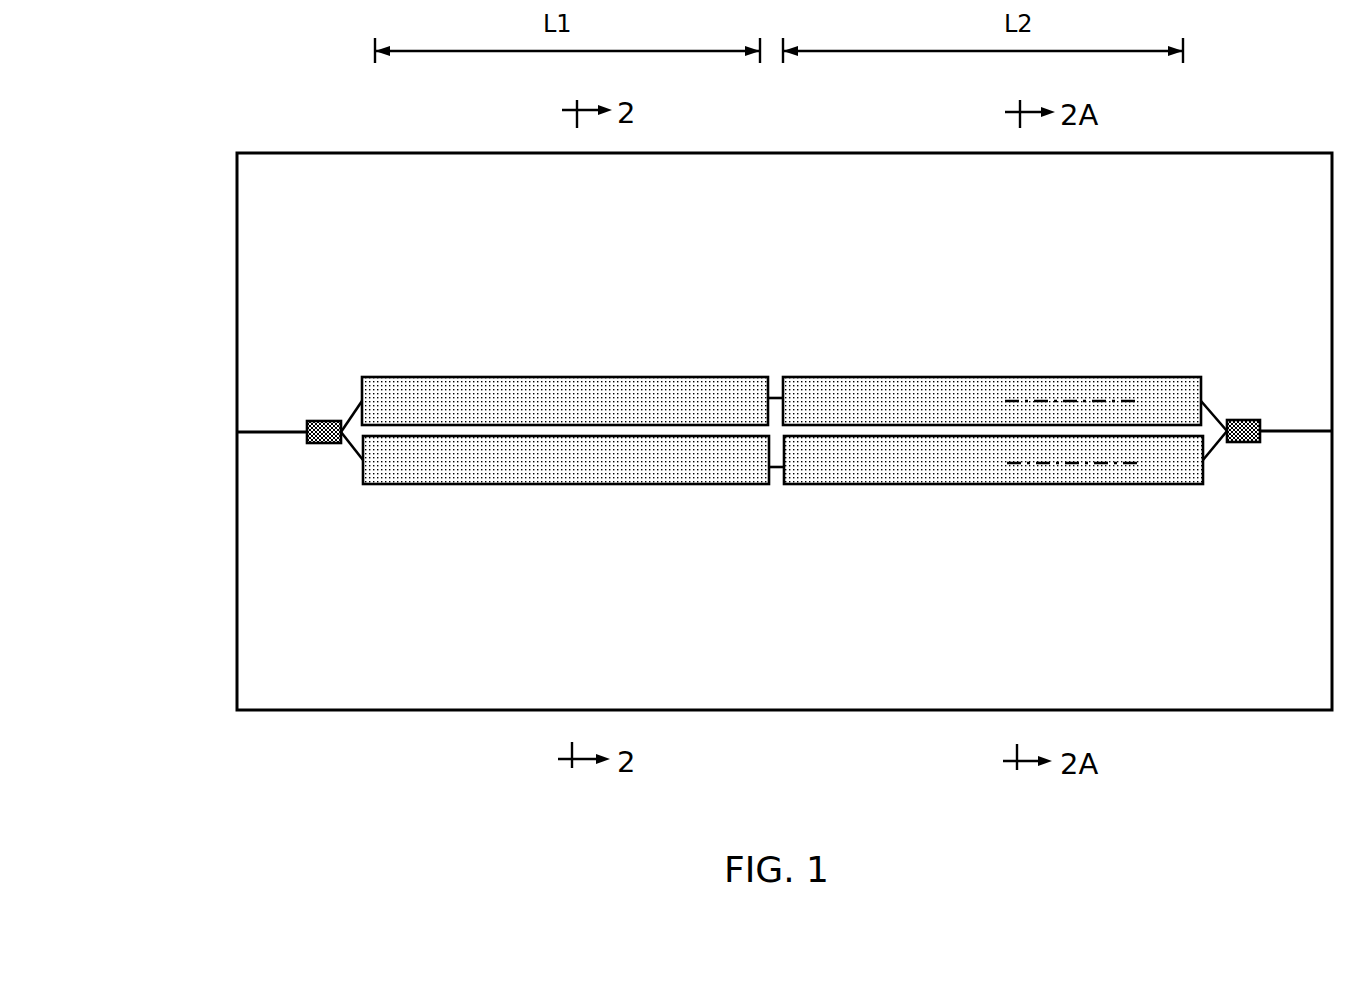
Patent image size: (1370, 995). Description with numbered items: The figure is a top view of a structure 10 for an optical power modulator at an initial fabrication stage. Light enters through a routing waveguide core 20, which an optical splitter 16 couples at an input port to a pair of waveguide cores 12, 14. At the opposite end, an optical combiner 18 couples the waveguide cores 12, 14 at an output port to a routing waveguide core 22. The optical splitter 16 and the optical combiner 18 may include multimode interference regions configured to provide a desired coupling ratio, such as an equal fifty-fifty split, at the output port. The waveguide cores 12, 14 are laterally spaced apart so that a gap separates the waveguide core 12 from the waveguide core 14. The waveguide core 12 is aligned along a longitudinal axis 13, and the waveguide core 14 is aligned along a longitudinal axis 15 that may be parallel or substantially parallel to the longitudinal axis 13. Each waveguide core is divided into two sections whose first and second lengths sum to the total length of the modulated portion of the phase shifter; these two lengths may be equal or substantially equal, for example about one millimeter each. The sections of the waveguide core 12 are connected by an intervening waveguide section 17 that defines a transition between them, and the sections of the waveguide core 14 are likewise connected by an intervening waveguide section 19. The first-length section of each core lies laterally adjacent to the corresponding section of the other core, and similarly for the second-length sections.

The structure 10 is at (368, 239).
The waveguide core 12 is at (577, 395).
The longitudinal axis 13 is at (1067, 400).
The waveguide core 14 is at (653, 460).
The longitudinal axis 15 is at (1040, 465).
The optical splitter 16 is at (322, 421).
The intervening waveguide section 17 is at (775, 396).
The optical combiner 18 is at (1240, 422).
The intervening waveguide section 19 is at (778, 470).
The routing waveguide core 20 is at (258, 432).
The routing waveguide core 22 is at (1295, 428).